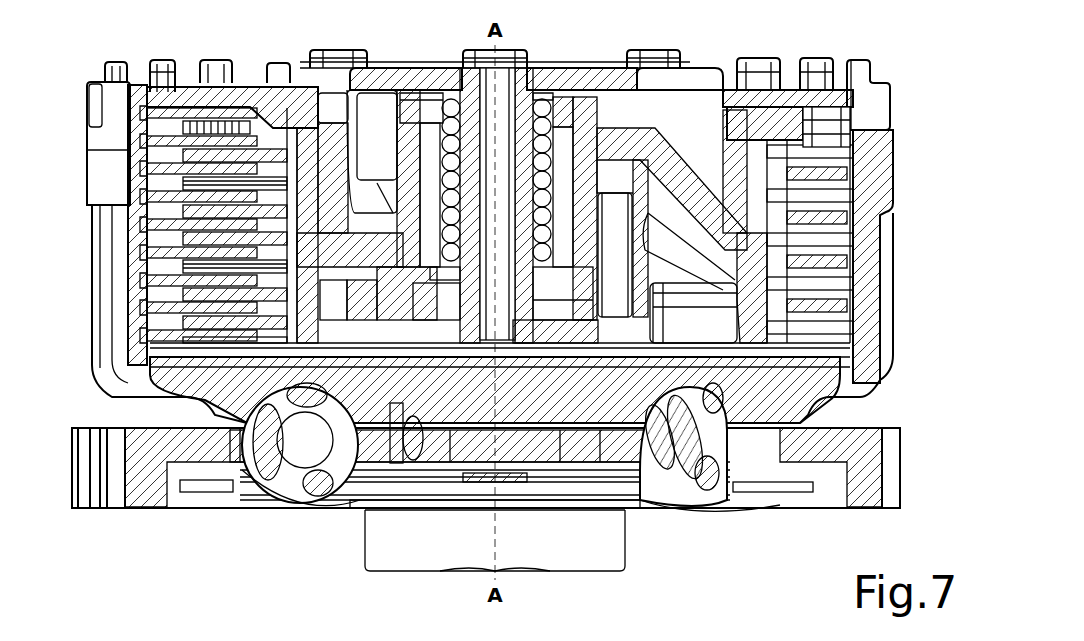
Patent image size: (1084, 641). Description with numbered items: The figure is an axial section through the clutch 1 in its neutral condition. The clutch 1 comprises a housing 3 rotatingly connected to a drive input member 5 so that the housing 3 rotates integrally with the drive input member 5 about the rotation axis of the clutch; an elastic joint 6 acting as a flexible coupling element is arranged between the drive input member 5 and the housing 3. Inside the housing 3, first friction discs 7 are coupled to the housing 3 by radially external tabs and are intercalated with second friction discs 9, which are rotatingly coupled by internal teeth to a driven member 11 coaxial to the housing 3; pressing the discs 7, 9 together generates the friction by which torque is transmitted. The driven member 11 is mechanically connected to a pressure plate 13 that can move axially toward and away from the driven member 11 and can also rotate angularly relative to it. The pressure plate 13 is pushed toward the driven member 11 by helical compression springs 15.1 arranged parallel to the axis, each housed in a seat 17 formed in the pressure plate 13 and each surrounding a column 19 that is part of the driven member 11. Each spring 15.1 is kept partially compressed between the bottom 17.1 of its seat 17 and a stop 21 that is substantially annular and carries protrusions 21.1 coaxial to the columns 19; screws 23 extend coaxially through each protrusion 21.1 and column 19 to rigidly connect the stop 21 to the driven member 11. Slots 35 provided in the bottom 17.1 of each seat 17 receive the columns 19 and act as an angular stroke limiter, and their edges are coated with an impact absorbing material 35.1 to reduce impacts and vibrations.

The clutch 1 is at (907, 90).
The housing 3 is at (90, 138).
The drive input member 5 is at (877, 412).
The elastic joint 6 is at (707, 477).
The first friction discs 7 is at (160, 335).
The second friction discs 9 is at (203, 292).
The driven member 11 is at (797, 147).
The pressure plate 13 is at (318, 105).
The helical compression springs 15.1 is at (535, 188).
The seat 17 is at (428, 163).
The bottom of the seat 17.1 is at (445, 273).
The column 19 is at (568, 250).
The stop 21 is at (550, 82).
The protrusions 21.1 is at (470, 108).
The screws 23 is at (503, 302).
The slots 35 is at (447, 277).
The impact absorbing coating 35.1 is at (575, 270).